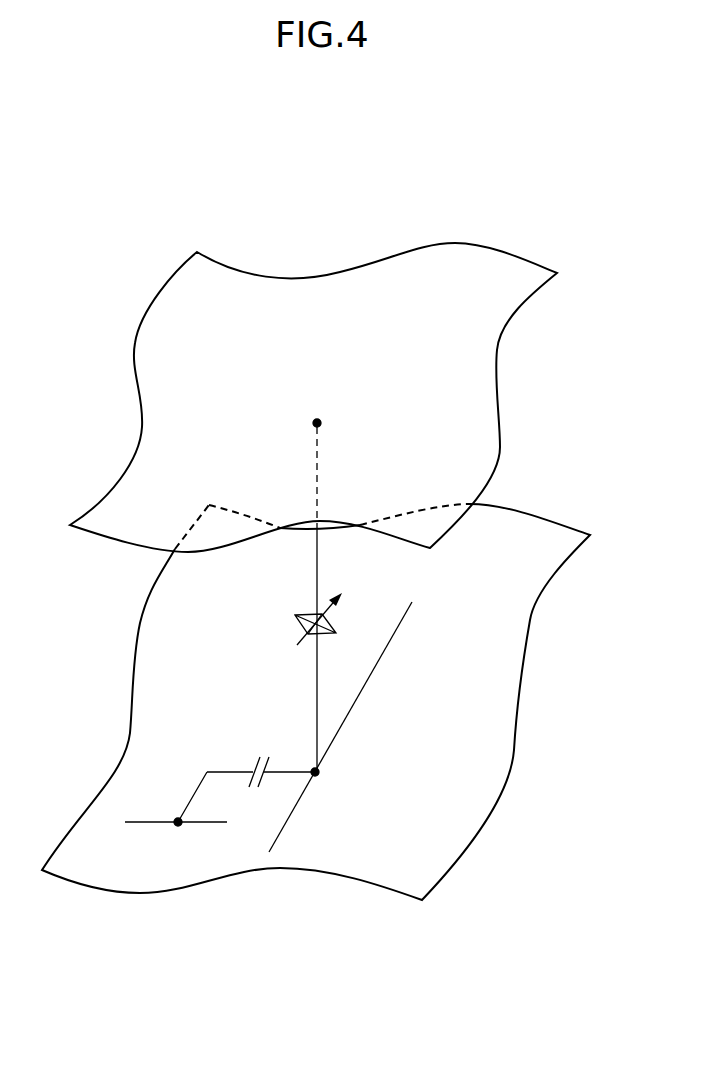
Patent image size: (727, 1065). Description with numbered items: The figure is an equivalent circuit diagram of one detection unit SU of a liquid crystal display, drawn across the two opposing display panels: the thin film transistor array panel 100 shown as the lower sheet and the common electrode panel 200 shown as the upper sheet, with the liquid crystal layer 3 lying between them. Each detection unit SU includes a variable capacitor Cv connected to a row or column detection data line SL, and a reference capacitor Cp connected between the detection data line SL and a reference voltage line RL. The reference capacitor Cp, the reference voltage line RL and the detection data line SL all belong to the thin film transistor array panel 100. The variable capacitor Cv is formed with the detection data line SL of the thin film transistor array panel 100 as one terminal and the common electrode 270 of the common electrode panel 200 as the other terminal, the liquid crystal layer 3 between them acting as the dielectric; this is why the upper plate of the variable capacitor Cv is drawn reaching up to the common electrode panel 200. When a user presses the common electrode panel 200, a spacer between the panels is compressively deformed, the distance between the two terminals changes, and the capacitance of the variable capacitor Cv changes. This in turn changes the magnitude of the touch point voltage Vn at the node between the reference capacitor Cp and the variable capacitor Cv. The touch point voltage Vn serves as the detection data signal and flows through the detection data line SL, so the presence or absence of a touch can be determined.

The liquid crystal layer 3 is at (88, 640).
The thin film transistor array panel 100 is at (534, 683).
The common electrode panel 200 is at (508, 421).
The common electrode 270 is at (500, 345).
The detection unit SU is at (271, 188).
The variable capacitor Cv is at (306, 619).
The reference capacitor Cp is at (261, 761).
The detection data line SL is at (351, 714).
The reference voltage line RL is at (172, 799).
The touch point voltage Vn is at (334, 655).